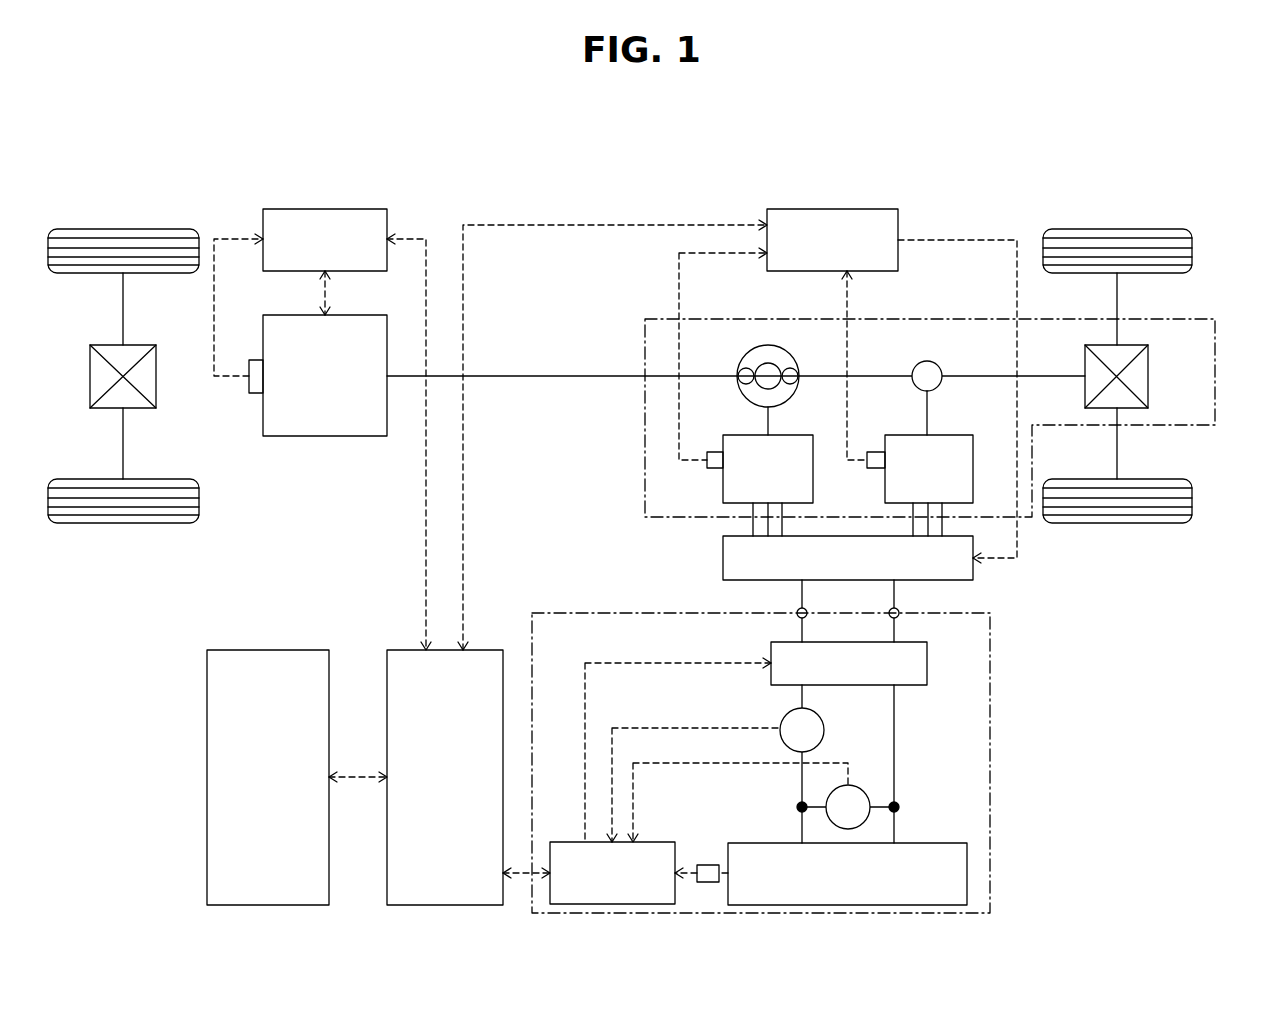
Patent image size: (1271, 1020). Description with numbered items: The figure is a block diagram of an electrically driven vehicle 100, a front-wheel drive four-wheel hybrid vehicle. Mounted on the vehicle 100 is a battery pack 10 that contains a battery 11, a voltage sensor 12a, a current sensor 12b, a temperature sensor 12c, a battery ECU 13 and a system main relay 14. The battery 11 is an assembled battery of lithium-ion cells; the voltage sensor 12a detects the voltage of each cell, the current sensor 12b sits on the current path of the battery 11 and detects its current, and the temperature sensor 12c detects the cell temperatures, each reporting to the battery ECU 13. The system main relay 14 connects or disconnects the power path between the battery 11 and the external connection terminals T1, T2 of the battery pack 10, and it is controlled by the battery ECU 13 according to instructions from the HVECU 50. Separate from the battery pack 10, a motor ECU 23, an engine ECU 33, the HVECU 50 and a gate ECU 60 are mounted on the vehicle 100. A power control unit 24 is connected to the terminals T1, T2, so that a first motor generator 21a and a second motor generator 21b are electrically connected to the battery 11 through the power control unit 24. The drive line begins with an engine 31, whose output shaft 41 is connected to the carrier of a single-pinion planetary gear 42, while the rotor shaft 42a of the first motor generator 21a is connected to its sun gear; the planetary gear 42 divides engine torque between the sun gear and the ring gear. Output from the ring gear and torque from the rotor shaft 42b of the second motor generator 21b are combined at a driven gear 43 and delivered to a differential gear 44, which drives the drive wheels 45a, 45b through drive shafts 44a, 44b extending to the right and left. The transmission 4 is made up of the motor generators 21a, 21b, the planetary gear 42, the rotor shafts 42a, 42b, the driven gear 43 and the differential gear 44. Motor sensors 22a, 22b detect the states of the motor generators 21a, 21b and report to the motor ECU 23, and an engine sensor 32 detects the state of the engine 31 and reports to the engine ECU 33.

The electrically driven vehicle 100 is at (1033, 205).
The transmission 4 is at (1217, 355).
The battery pack 10 is at (975, 613).
The battery 11 is at (935, 843).
The voltage sensor 12a is at (862, 792).
The current sensor 12b is at (826, 730).
The temperature sensor 12c is at (708, 864).
The battery ECU 13 is at (576, 842).
The system main relay 14 is at (928, 664).
The first motor generator 21a is at (785, 435).
The second motor generator 21b is at (947, 435).
The motor sensor 22a is at (717, 470).
The motor sensor 22b is at (877, 470).
The motor ECU 23 is at (855, 209).
The power control unit 24 is at (985, 534).
The engine 31 is at (345, 315).
The engine sensor 32 is at (258, 397).
The engine ECU 33 is at (350, 209).
The output shaft 41 is at (574, 376).
The planetary gear 42 is at (787, 352).
The rotor shaft 42a is at (766, 419).
The rotor shaft 42b is at (926, 419).
The driven gear 43 is at (937, 361).
The differential gear 44 is at (1130, 345).
The drive shaft 44a is at (1115, 300).
The drive shaft 44b is at (1115, 450).
The drive wheel 45a is at (1145, 228).
The drive wheel 45b is at (1145, 523).
The HVECU 50 is at (282, 650).
The gate ECU 60 is at (480, 650).
The external connection terminal T1 is at (797, 610).
The external connection terminal T2 is at (900, 609).